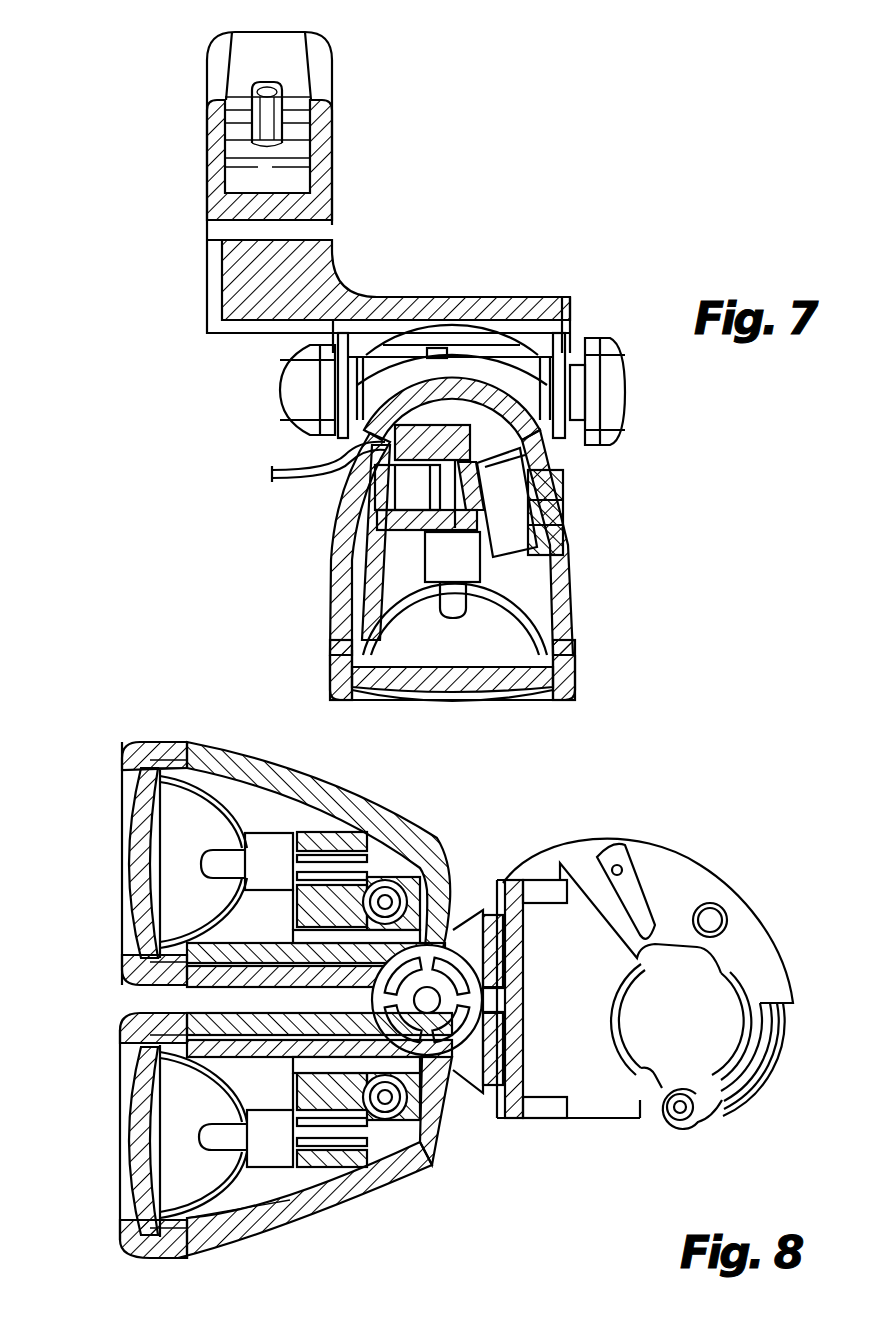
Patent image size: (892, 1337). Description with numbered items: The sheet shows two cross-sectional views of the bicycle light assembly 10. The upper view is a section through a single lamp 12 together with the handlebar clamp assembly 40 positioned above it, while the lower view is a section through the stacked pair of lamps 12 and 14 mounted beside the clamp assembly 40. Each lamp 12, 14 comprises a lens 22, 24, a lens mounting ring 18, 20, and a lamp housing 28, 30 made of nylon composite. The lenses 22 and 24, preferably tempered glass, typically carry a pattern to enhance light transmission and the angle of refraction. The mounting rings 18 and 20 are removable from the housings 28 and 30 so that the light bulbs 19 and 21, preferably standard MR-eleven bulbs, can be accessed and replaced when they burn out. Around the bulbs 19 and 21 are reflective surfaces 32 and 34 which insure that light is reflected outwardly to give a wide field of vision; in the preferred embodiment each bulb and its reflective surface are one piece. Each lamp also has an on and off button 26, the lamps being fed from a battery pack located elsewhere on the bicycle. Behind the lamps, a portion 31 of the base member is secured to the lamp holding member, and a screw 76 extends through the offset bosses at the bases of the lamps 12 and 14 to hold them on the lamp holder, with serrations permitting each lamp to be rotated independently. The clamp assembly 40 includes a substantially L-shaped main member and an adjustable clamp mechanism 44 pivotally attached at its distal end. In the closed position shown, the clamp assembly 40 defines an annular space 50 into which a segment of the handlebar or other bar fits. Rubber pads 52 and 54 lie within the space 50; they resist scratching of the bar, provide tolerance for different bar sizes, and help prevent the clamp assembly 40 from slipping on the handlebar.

In FIG. 8, the light assembly 10 is at (170, 705).
In FIG. 7, the lamp 12 is at (326, 567).
In FIG. 8, the lamp 12 is at (244, 868).
In FIG. 8, the lamp 14 is at (110, 1062).
In FIG. 7, the lens mounting ring 18 is at (333, 655).
In FIG. 8, the lens mounting ring 18 is at (143, 985).
In FIG. 7, the light bulb 19 is at (567, 628).
In FIG. 8, the light bulb 19 is at (200, 858).
In FIG. 8, the lens mounting ring 20 is at (153, 1253).
In FIG. 8, the light bulb 21 is at (202, 1137).
In FIG. 7, the lens 22 is at (477, 702).
In FIG. 8, the lens 22 is at (137, 888).
In FIG. 8, the lens 24 is at (130, 1127).
In FIG. 7, the on and off button 26 is at (573, 512).
In FIG. 8, the lamp housing 28 is at (333, 783).
In FIG. 8, the lamp housing 30 is at (307, 1222).
In FIG. 8, the portion of base member 31 is at (515, 1118).
In FIG. 7, the reflective surface 32 is at (570, 597).
In FIG. 8, the reflective surface 34 is at (237, 1192).
In FIG. 7, the handlebar clamp assembly 40 is at (198, 130).
In FIG. 8, the handlebar clamp assembly 40 is at (728, 846).
In FIG. 8, the adjustable clamp mechanism 44 is at (735, 905).
In FIG. 8, the annular space 50 is at (690, 1037).
In FIG. 8, the pad 52 is at (641, 1120).
In FIG. 8, the pad 54 is at (700, 1090).
In FIG. 7, the screw 76 is at (610, 380).